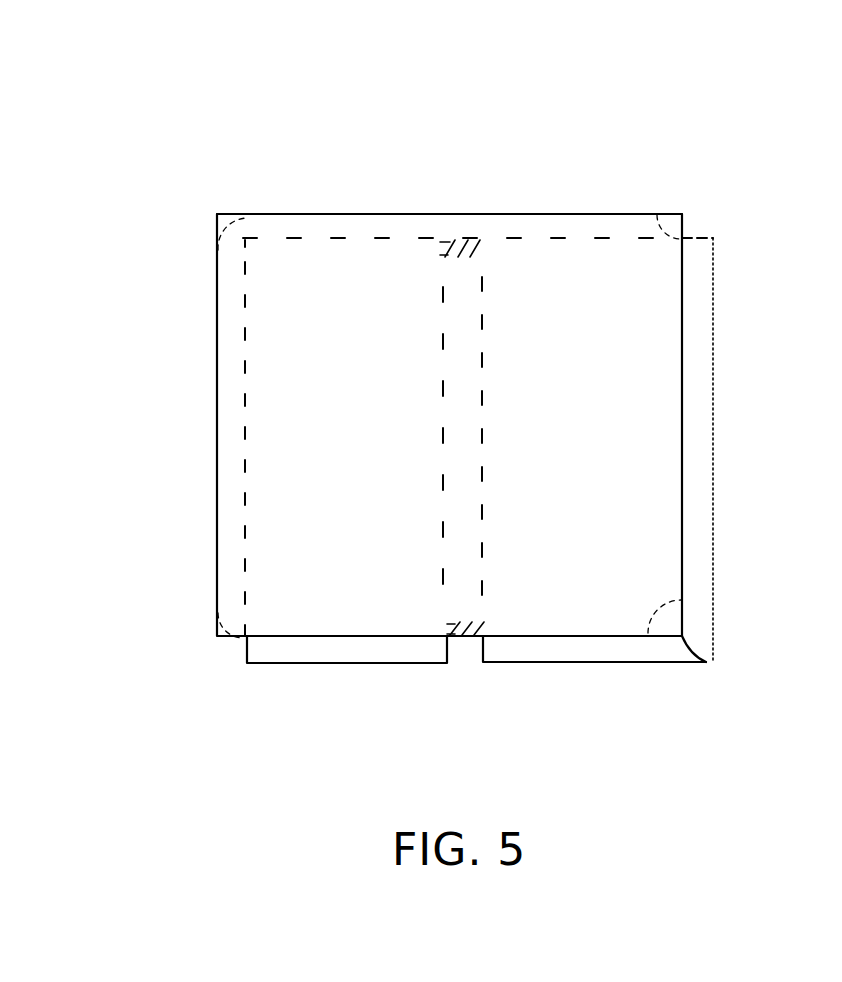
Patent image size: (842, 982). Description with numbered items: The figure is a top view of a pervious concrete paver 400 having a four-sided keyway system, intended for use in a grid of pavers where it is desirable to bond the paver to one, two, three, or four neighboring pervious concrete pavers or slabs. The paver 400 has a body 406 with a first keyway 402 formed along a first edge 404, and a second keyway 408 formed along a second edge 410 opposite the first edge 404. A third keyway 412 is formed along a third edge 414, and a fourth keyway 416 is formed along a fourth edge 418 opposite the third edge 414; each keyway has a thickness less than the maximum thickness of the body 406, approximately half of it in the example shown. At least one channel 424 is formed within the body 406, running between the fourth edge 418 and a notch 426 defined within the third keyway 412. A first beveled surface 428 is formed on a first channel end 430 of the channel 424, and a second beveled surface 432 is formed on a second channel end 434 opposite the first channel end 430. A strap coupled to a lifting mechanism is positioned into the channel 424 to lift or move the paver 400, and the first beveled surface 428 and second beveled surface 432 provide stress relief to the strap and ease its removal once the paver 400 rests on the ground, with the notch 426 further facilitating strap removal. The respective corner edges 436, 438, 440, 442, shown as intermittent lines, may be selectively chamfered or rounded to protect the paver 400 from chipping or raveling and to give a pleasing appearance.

The paver 400 is at (104, 128).
The first keyway 402 is at (228, 513).
The first edge 404 is at (150, 432).
The body 406 is at (595, 404).
The second keyway 408 is at (700, 500).
The second edge 410 is at (784, 416).
The third keyway 412 is at (575, 648).
The third edge 414 is at (245, 707).
The fourth keyway 416 is at (648, 226).
The fourth edge 418 is at (233, 190).
The channel 424 is at (470, 518).
The notch 426 is at (458, 665).
The first beveled surface 428 is at (445, 625).
The first channel end 430 is at (490, 625).
The second beveled surface 432 is at (468, 250).
The second channel end 434 is at (497, 248).
The edge 436 is at (217, 214).
The edge 438 is at (682, 214).
The edge 440 is at (706, 662).
The edge 442 is at (217, 638).